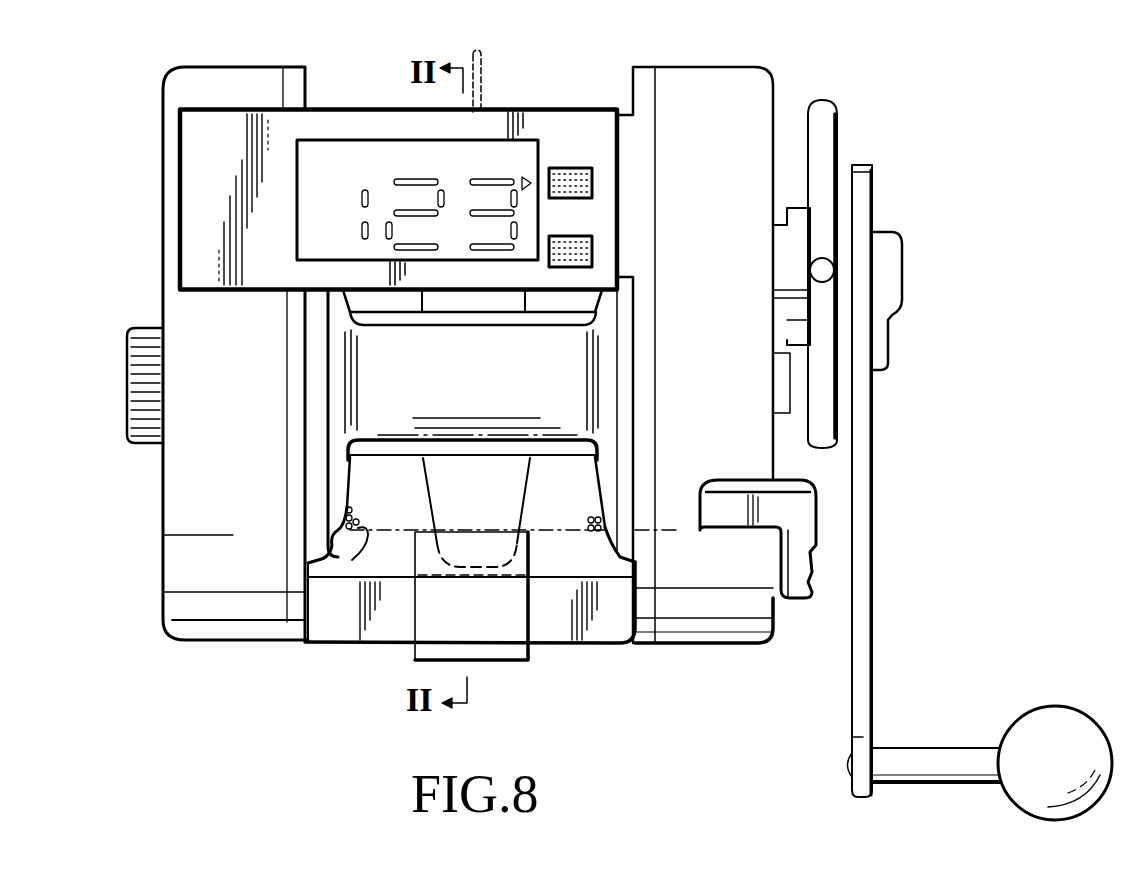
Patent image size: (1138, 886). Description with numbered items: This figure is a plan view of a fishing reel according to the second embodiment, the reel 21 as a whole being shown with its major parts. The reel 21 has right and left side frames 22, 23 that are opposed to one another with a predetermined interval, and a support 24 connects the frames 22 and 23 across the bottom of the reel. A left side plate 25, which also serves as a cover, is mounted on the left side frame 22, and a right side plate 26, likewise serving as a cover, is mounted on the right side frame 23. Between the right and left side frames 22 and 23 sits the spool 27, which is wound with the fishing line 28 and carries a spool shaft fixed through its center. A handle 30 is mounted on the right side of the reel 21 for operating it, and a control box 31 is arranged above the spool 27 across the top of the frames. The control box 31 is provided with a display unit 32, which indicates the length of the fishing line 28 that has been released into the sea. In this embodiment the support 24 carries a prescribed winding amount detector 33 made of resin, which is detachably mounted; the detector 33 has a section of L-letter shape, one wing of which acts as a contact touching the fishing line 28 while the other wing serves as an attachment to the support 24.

The reel 21 is at (538, 96).
The left side frame 22 is at (292, 562).
The right side frame 23 is at (650, 600).
The support 24 is at (328, 630).
The left side plate 25 is at (182, 488).
The right side plate 26 is at (752, 603).
The spool 27 is at (363, 368).
The fishing line 28 is at (368, 530).
The handle 30 is at (863, 593).
The control box 31 is at (193, 219).
The display unit 32 is at (337, 158).
The prescribed winding amount detector 33 is at (502, 625).